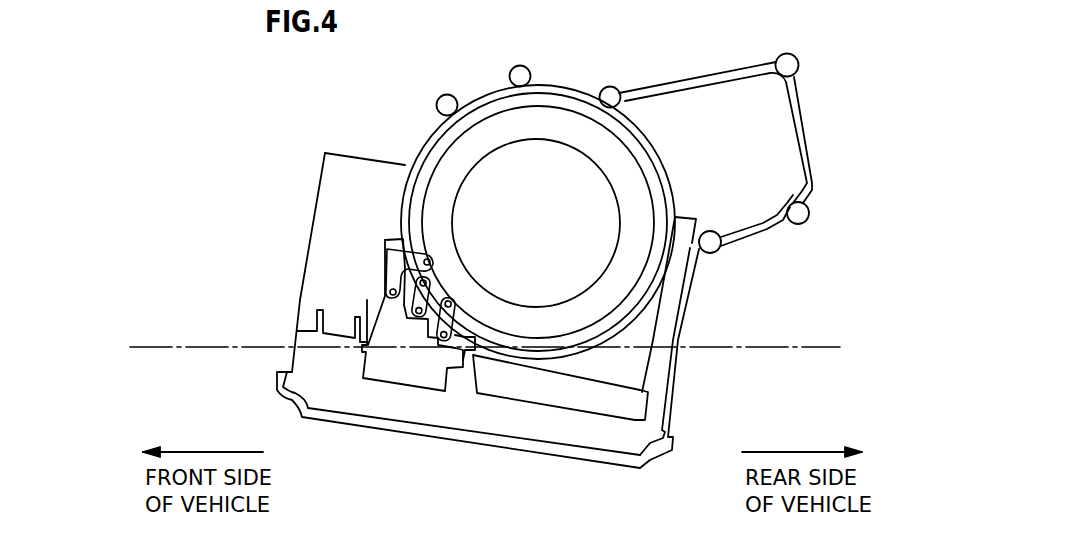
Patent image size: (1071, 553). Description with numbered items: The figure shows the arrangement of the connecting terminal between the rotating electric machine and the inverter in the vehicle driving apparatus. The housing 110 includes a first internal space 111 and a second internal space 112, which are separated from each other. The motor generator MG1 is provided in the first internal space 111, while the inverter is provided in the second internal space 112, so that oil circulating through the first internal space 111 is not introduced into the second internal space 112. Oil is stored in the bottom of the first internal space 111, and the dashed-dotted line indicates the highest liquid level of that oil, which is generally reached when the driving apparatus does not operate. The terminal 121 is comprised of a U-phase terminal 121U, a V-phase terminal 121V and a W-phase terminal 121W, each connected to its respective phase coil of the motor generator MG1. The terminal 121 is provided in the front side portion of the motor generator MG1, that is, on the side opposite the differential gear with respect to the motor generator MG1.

The motor generator MG1 is at (490, 112).
The housing 110 is at (154, 262).
The first internal space 111 is at (413, 210).
The second internal space 112 is at (332, 378).
The terminal 121 is at (507, 487).
The U-phase terminal 121U is at (361, 345).
The V-phase terminal 121V is at (403, 318).
The W-phase terminal 121W is at (463, 340).